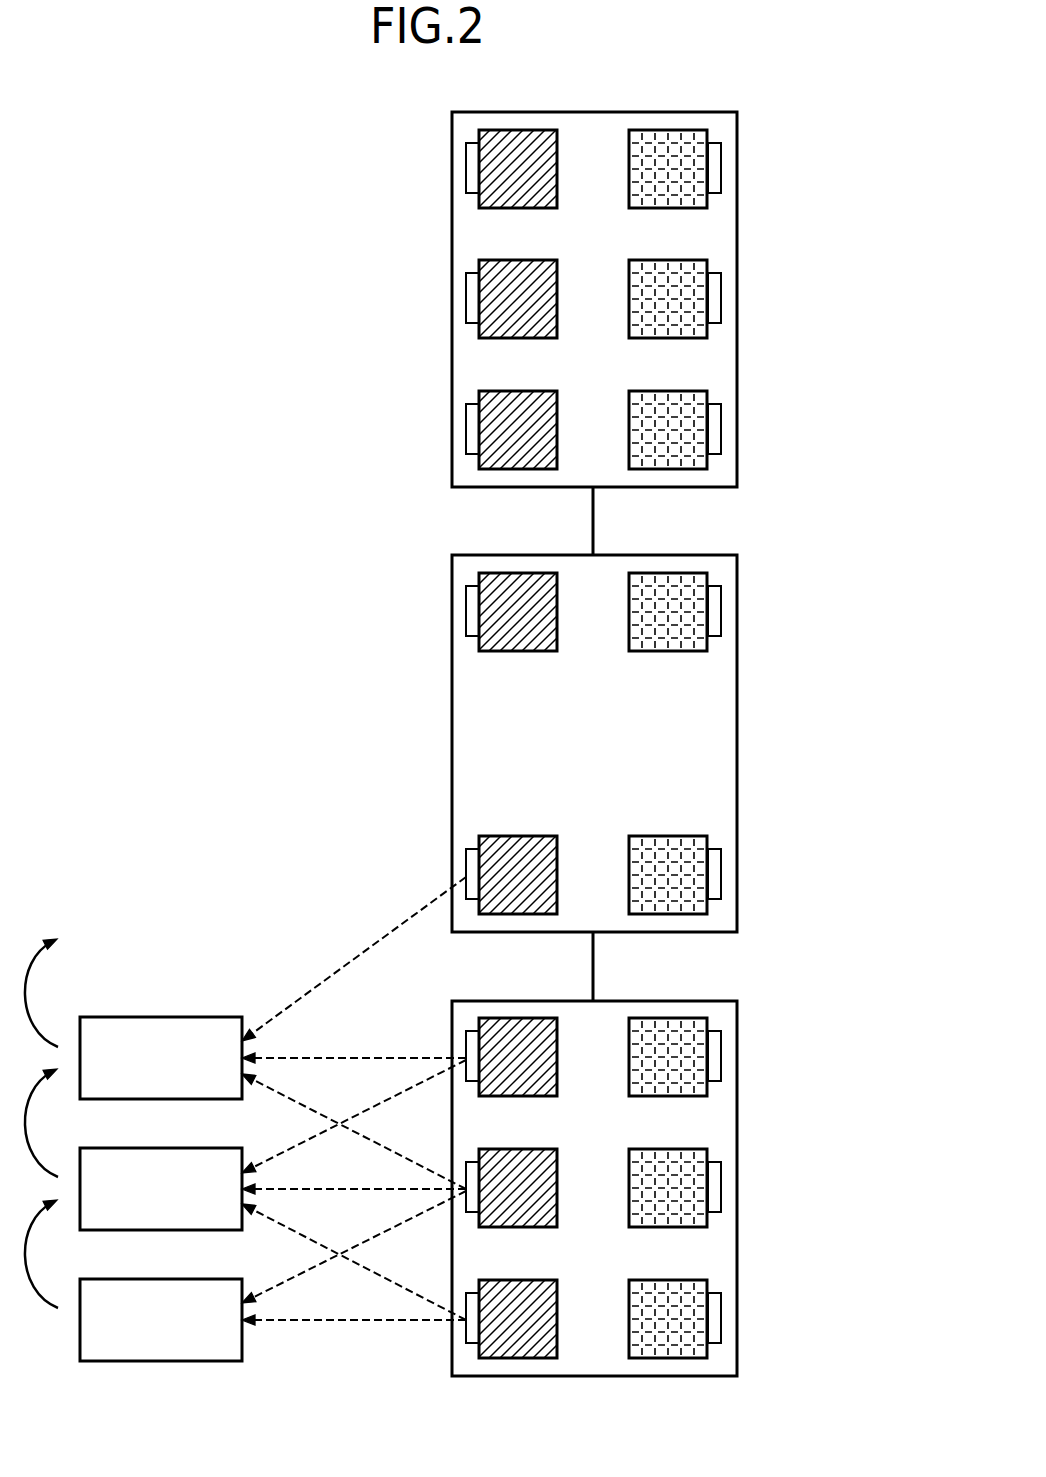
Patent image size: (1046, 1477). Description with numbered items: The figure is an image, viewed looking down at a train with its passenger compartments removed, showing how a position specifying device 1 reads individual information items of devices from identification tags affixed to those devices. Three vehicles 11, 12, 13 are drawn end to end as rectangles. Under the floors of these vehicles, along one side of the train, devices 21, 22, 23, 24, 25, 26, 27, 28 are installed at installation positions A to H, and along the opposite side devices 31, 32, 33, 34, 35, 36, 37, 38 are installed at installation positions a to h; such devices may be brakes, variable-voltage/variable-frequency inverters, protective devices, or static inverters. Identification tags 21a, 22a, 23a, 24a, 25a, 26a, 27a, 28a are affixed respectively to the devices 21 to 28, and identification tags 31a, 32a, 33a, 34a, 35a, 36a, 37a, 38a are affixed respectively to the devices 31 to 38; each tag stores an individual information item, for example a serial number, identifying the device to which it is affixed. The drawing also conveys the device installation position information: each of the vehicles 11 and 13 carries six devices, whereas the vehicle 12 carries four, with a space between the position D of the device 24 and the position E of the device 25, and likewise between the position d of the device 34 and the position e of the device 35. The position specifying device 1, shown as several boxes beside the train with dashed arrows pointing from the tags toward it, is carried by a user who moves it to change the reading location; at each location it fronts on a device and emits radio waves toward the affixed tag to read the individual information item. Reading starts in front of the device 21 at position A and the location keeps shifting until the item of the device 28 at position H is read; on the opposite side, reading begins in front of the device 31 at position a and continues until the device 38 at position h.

The position specifying device 1 is at (165, 1017).
The vehicle 11 is at (700, 1001).
The vehicle 12 is at (700, 555).
The vehicle 13 is at (700, 112).
The device 21 is at (522, 1280).
The identification tag 21a is at (471, 1293).
The device 22 is at (522, 1149).
The identification tag 22a is at (471, 1162).
The device 23 is at (514, 1018).
The identification tag 23a is at (471, 1031).
The device 24 is at (479, 838).
The identification tag 24a is at (466, 857).
The device 25 is at (479, 580).
The identification tag 25a is at (466, 613).
The device 26 is at (479, 398).
The identification tag 26a is at (466, 431).
The device 27 is at (479, 267).
The identification tag 27a is at (466, 300).
The device 28 is at (479, 137).
The identification tag 28a is at (466, 170).
The device 31 is at (708, 1287).
The identification tag 31a is at (722, 1320).
The device 32 is at (708, 1156).
The identification tag 32a is at (722, 1189).
The device 33 is at (708, 1025).
The identification tag 33a is at (722, 1058).
The device 34 is at (708, 843).
The identification tag 34a is at (722, 876).
The device 35 is at (708, 580).
The identification tag 35a is at (722, 613).
The device 36 is at (708, 398).
The identification tag 36a is at (722, 431).
The device 37 is at (708, 267).
The identification tag 37a is at (722, 300).
The device 38 is at (708, 137).
The identification tag 38a is at (722, 170).